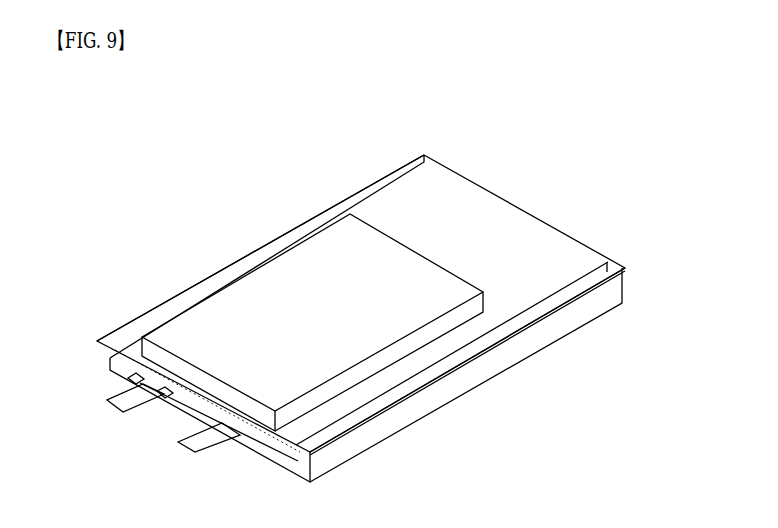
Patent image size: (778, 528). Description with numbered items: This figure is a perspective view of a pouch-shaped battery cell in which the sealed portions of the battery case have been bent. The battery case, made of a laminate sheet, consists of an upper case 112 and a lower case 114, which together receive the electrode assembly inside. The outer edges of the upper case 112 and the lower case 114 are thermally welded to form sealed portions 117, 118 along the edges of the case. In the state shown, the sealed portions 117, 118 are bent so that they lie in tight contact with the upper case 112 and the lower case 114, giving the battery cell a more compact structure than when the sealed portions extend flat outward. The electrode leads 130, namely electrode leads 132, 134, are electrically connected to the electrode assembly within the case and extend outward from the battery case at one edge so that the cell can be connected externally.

The upper case 112 is at (237, 303).
The lower case 114 is at (560, 332).
The sealed portion 117 is at (424, 154).
The sealed portion 118 is at (610, 253).
The electrode leads 130 is at (117, 484).
The electrode lead 132 is at (107, 402).
The electrode lead 134 is at (178, 443).